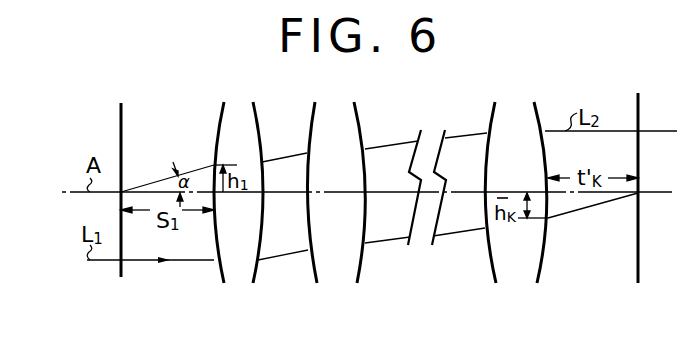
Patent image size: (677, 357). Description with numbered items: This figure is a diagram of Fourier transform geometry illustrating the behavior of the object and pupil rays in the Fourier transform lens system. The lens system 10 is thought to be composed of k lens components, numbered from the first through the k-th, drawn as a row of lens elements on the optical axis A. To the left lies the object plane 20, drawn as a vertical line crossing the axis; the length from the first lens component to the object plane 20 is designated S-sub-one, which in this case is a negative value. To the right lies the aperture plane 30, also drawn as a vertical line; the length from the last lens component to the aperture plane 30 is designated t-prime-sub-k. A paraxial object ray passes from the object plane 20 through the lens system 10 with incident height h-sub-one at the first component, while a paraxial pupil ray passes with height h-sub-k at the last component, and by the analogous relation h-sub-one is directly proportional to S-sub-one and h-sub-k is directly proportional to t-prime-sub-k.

The lens system 10 is at (212, 293).
The object plane 20 is at (121, 265).
The aperture plane 30 is at (638, 262).